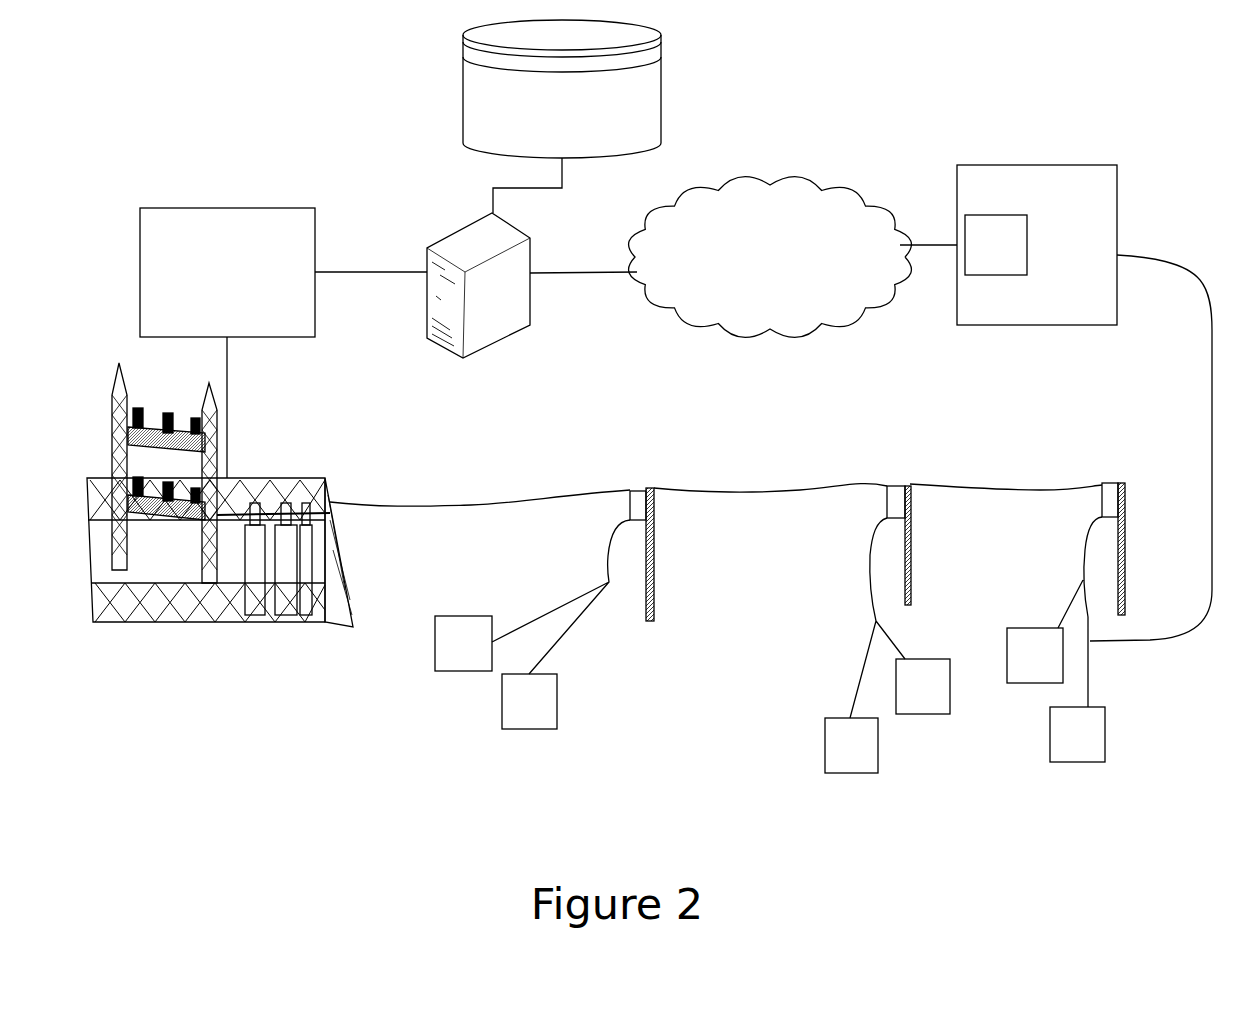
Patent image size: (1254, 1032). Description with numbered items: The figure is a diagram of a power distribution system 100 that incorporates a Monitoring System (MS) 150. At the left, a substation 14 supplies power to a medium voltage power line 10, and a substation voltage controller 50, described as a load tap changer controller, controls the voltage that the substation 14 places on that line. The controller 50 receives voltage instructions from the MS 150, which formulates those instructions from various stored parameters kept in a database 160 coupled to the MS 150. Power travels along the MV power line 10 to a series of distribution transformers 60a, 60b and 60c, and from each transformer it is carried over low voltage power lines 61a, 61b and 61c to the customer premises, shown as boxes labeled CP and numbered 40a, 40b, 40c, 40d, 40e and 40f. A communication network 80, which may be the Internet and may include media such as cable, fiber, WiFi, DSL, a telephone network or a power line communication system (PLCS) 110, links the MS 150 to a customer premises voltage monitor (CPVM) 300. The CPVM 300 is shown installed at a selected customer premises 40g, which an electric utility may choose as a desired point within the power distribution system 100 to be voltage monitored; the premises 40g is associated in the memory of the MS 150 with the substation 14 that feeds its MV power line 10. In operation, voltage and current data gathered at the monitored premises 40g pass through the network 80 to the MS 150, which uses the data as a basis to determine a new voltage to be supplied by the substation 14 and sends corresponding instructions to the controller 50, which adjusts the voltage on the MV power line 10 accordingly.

The substation 14 is at (220, 526).
The substation voltage controller 50 is at (283, 343).
The Monitoring System (MS) 150 is at (463, 230).
The database 160 is at (562, 116).
The communication network 80 is at (887, 228).
The customer premises 40g is at (1084, 370).
The customer premises voltage monitor (CPVM) 300 is at (996, 245).
The medium voltage (MV) power line 10 is at (490, 502).
The distribution transformer 60a is at (644, 490).
The distribution transformer 60b is at (893, 486).
The distribution transformer 60c is at (1106, 483).
The low voltage (LV) power line 61a is at (617, 601).
The low voltage (LV) power line 61b is at (903, 626).
The low voltage (LV) power line 61c is at (1098, 675).
The customer premises 40a is at (461, 671).
The customer premises 40b is at (531, 729).
The customer premises 40c is at (825, 745).
The customer premises 40d is at (912, 714).
The customer premises 40e is at (1022, 683).
The customer premises 40f is at (1073, 762).
The power distribution system 100 is at (222, 740).
The PLCS 110 is at (691, 759).